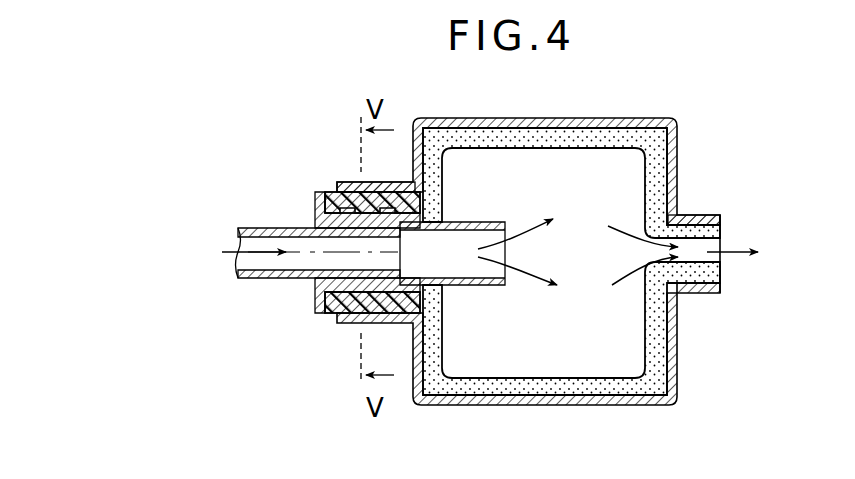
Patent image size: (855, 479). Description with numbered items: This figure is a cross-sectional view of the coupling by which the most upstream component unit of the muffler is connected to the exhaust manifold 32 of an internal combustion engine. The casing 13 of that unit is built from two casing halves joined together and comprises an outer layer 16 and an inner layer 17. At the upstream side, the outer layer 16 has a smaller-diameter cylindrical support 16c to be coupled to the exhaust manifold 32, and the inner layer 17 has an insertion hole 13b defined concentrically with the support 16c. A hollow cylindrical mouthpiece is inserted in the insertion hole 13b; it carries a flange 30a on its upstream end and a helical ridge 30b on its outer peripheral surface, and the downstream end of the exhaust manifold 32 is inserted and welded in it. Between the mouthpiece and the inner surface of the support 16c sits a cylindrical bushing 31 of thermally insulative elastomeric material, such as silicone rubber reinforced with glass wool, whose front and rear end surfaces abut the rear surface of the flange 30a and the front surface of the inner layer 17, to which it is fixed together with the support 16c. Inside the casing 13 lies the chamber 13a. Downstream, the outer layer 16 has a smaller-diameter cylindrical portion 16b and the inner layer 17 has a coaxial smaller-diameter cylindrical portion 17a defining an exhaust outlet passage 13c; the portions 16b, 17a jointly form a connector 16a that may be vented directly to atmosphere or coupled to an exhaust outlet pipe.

The casing 13 is at (633, 137).
The sound absorbing layer 13a is at (553, 157).
The insertion hole 13b is at (449, 237).
The exhaust outlet passage 13c is at (706, 266).
The outer layer 16 is at (592, 405).
The connector 16a is at (733, 204).
The smaller-diameter cylindrical portion 16b is at (700, 213).
The cylindrical support 16c is at (350, 181).
The inner layer 17 is at (535, 386).
The smaller-diameter cylindrical portion 17a is at (712, 233).
The flange 30a is at (316, 212).
The helical ridge 30b is at (362, 313).
The cylindrical bushing 31 is at (390, 182).
The exhaust manifold 32 is at (277, 279).